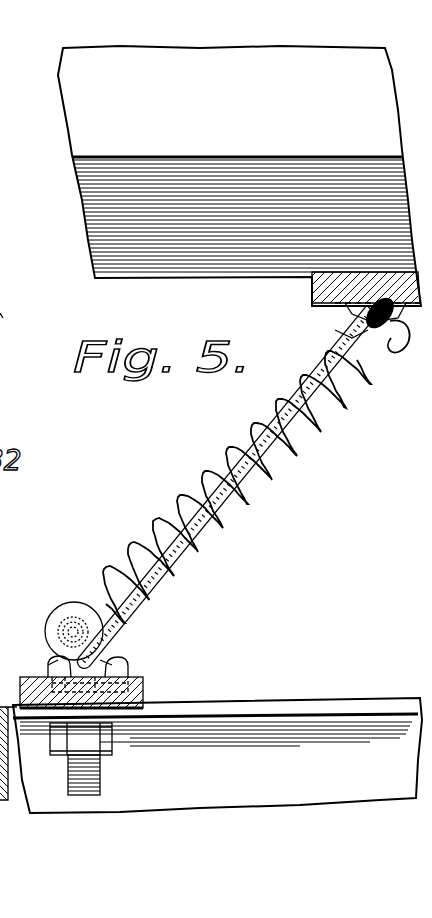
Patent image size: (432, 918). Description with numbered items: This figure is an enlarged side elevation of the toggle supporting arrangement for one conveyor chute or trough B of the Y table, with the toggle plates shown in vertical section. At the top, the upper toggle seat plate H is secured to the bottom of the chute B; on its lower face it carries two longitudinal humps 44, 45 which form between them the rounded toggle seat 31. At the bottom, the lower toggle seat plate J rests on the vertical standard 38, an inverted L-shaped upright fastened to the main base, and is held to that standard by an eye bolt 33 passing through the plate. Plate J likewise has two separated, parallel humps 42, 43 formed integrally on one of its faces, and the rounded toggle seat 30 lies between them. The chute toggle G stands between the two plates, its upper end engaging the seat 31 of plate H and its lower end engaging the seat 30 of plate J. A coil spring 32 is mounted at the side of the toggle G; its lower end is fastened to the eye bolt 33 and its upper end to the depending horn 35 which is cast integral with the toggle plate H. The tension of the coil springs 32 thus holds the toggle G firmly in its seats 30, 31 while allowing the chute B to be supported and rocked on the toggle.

The conveyor chute B is at (244, 176).
The upper chute toggle seat plate H is at (311, 290).
The toggle seat 31 is at (376, 301).
The hump 44 is at (348, 307).
The hump 45 is at (362, 325).
The depending horn 35 is at (392, 350).
The chute toggle G is at (298, 452).
The coil spring 32 is at (250, 500).
The eye bolt 33 is at (63, 613).
The hump 43 is at (50, 663).
The hump 42 is at (112, 660).
The lower chute toggle seat plate J is at (118, 675).
The toggle seat 30 is at (143, 690).
The vertical standard 38 is at (211, 755).